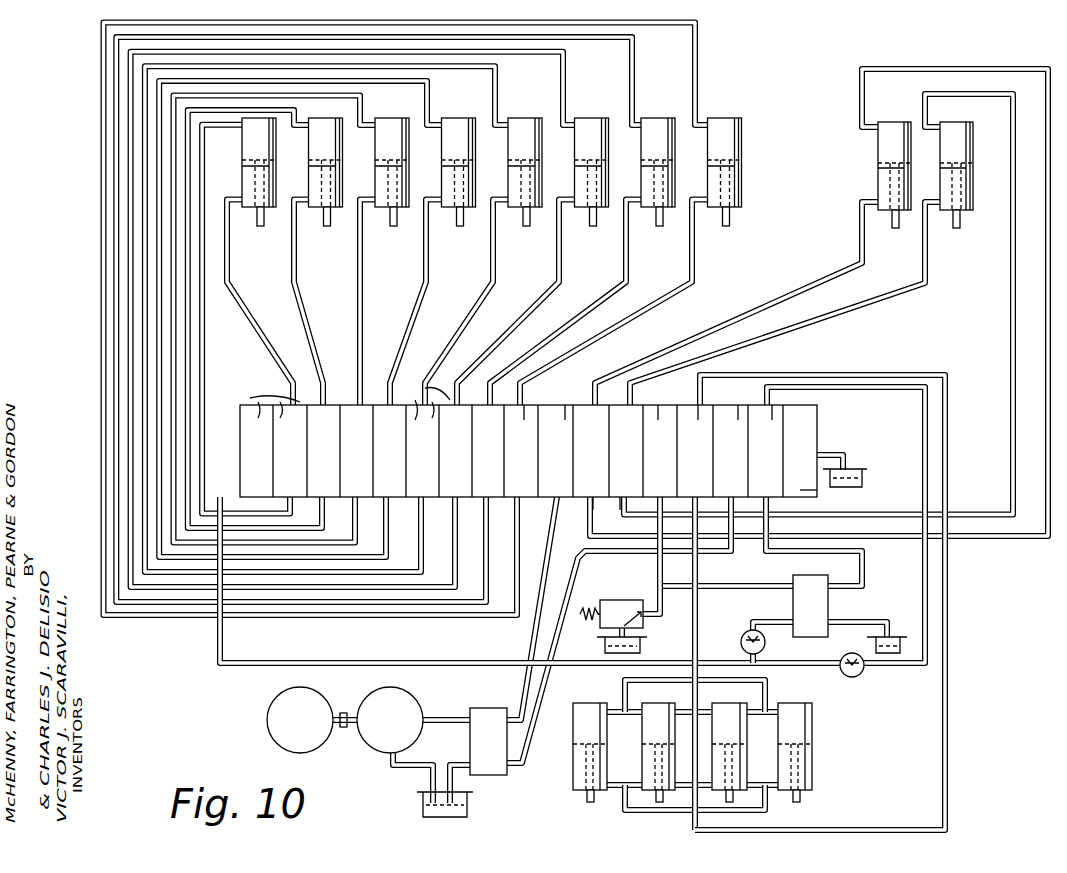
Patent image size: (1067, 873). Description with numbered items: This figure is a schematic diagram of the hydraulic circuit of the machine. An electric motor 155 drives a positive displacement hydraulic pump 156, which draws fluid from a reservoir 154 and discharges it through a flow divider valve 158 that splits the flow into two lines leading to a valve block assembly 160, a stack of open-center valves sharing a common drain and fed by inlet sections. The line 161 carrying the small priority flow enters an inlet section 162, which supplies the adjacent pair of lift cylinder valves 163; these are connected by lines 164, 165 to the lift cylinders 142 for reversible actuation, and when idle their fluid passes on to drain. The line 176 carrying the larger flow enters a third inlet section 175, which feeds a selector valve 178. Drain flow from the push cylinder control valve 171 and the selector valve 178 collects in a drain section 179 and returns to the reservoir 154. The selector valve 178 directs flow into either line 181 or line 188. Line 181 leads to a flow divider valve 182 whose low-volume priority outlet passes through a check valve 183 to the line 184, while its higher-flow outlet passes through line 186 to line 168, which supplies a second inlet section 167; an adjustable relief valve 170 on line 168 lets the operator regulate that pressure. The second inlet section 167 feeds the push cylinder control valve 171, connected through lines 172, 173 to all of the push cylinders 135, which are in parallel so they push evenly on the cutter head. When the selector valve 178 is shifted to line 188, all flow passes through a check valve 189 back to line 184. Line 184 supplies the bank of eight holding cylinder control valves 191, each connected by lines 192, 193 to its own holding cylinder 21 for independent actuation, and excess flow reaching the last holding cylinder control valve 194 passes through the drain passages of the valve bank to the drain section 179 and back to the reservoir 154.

The holding cylinder 21 is at (568, 135).
The push cylinder 135 is at (611, 725).
The lift cylinder 142 is at (885, 147).
The reservoir 154 is at (647, 646).
The electric motor 155 is at (267, 729).
The positive displacement hydraulic pump 156 is at (373, 749).
The flow divider valve 158 is at (490, 771).
The valve block assembly 160 is at (822, 428).
The line 161 is at (534, 633).
The inlet section 162 is at (566, 407).
The lift cylinder valve 163 is at (620, 500).
The line 164 is at (900, 290).
The line 165 is at (1008, 548).
The second inlet section 167 is at (658, 414).
The line 168 is at (657, 567).
The adjustable relief valve 170 is at (644, 623).
The push cylinder control valve 171 is at (698, 416).
The line 172 is at (699, 571).
The line 173 is at (948, 731).
The third inlet section 175 is at (739, 417).
The line 176 is at (548, 686).
The selector valve 178 is at (772, 418).
The drain section 179 is at (813, 490).
The line 181 is at (864, 561).
The flow divider valve 182 is at (829, 605).
The check valve 183 is at (766, 642).
The line 184 is at (387, 660).
The line 186 is at (762, 590).
The line 188 is at (923, 444).
The check valve 189 is at (859, 681).
The holding cylinder control valve 191 is at (350, 392).
The line 192 is at (231, 262).
The line 193 is at (86, 245).
The last holding cylinder control valve 194 is at (526, 412).